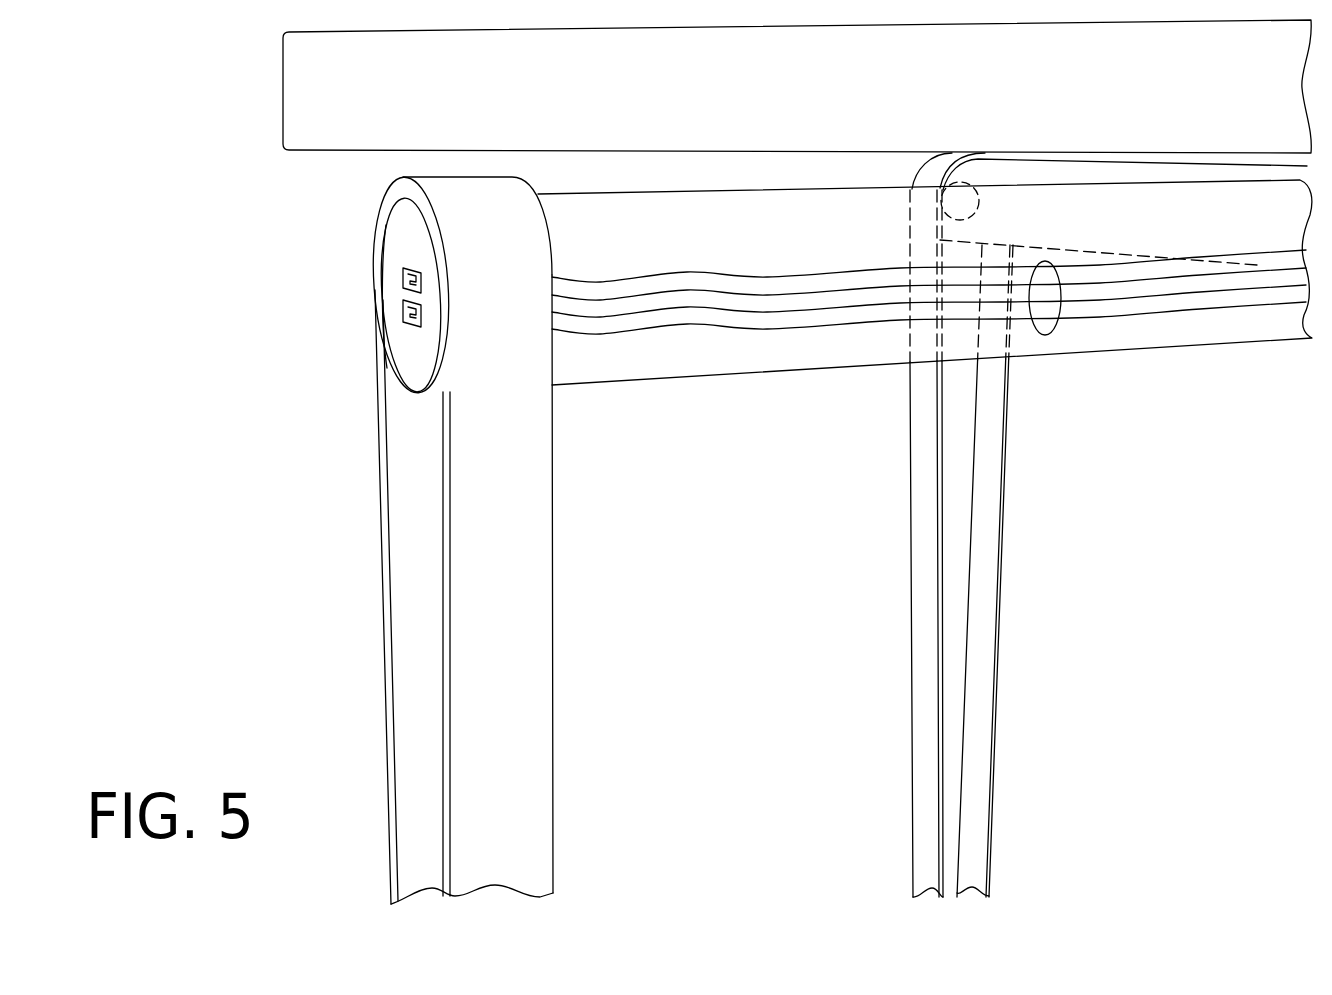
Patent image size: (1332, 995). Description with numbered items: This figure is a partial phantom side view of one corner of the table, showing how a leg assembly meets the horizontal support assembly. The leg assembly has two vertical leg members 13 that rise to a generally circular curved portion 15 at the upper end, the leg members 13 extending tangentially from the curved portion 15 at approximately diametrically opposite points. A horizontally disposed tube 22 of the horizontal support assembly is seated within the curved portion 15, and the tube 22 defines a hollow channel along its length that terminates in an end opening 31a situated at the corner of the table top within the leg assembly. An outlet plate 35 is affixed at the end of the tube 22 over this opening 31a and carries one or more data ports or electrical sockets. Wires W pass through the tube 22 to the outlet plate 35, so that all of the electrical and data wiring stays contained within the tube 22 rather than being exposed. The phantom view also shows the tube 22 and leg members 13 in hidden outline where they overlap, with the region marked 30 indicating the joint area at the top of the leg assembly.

The curved portion 15 is at (403, 190).
The outlet plate 35 is at (403, 250).
The vertical leg members 13 is at (477, 568).
The tube 22 is at (737, 358).
The connection joint 30 is at (972, 228).
The end opening 31a is at (945, 187).
The wires W is at (1050, 333).